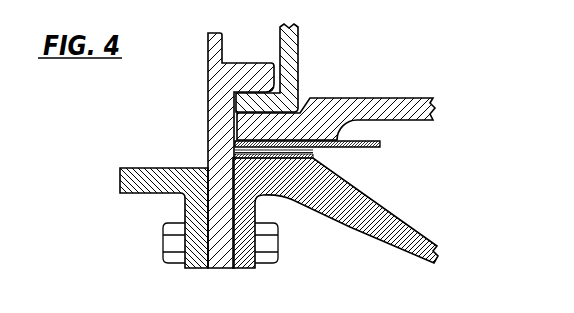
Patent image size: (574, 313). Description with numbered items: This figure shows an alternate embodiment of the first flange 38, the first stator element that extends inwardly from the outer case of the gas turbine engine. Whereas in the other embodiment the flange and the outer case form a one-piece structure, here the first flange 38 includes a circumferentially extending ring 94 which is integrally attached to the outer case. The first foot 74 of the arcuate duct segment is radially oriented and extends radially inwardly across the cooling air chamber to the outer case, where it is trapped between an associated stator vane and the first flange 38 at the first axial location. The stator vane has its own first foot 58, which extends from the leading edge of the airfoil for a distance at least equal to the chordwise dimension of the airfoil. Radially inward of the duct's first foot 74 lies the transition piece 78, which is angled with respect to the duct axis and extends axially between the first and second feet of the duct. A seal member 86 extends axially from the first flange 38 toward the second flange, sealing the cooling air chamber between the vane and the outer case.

The first flange 38 is at (176, 124).
The circumferentially extending ring 94 is at (217, 48).
The first foot 74 is at (291, 65).
The first foot 58 is at (368, 110).
The seal member 86 is at (366, 138).
The transition piece 78 is at (313, 156).